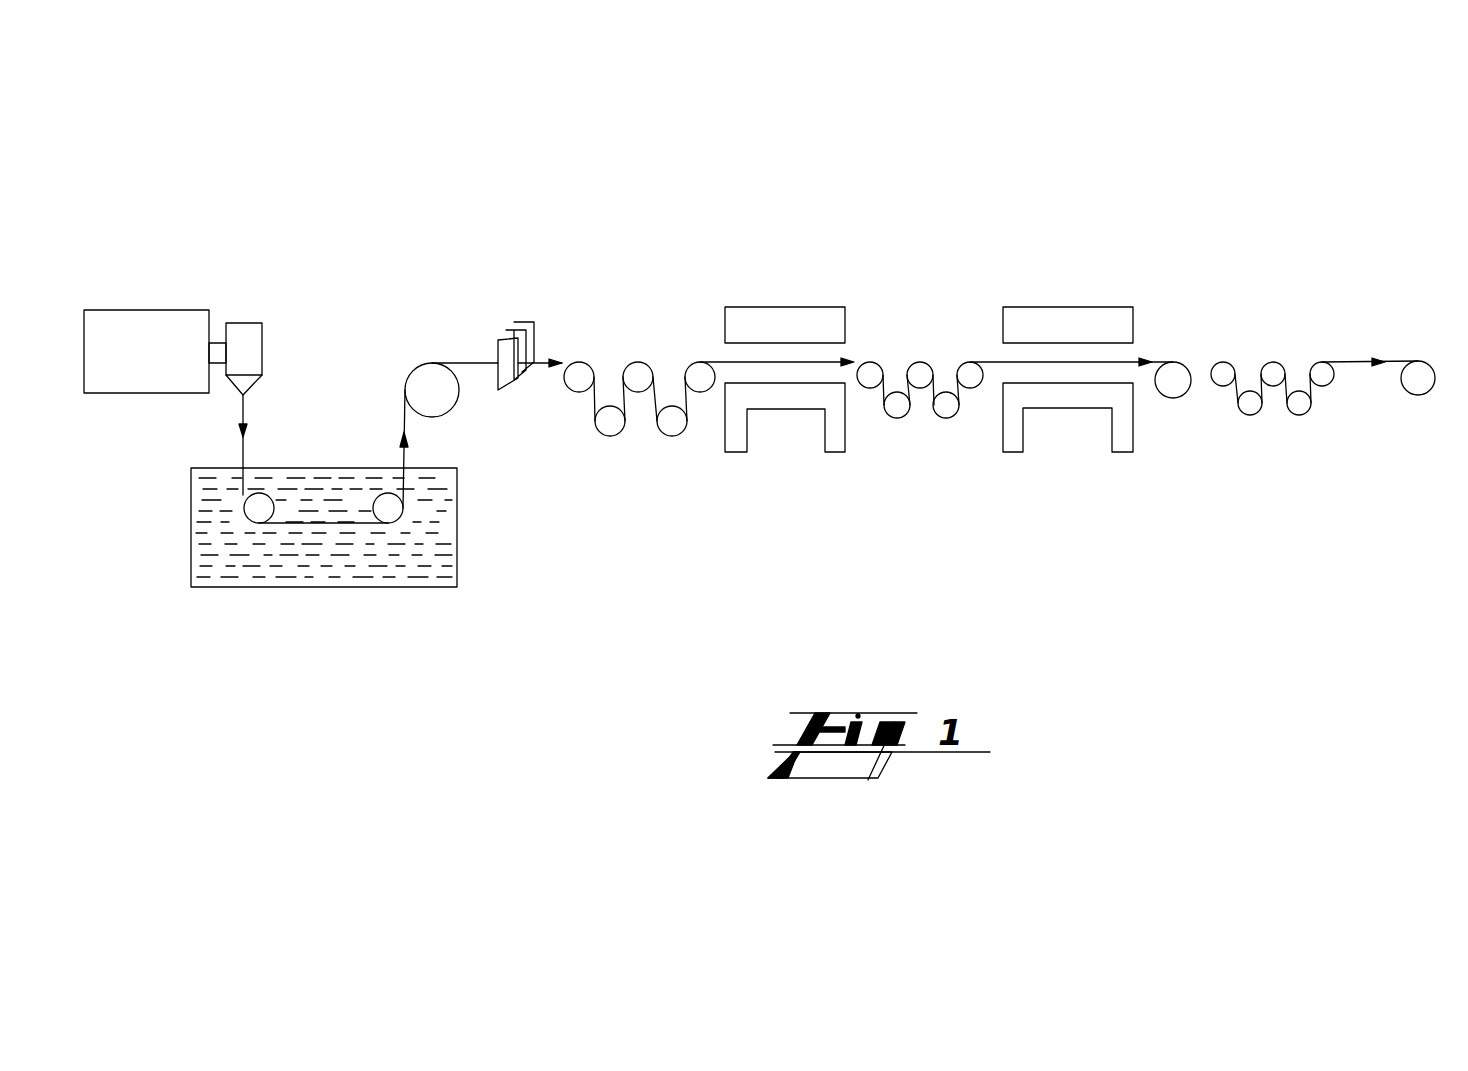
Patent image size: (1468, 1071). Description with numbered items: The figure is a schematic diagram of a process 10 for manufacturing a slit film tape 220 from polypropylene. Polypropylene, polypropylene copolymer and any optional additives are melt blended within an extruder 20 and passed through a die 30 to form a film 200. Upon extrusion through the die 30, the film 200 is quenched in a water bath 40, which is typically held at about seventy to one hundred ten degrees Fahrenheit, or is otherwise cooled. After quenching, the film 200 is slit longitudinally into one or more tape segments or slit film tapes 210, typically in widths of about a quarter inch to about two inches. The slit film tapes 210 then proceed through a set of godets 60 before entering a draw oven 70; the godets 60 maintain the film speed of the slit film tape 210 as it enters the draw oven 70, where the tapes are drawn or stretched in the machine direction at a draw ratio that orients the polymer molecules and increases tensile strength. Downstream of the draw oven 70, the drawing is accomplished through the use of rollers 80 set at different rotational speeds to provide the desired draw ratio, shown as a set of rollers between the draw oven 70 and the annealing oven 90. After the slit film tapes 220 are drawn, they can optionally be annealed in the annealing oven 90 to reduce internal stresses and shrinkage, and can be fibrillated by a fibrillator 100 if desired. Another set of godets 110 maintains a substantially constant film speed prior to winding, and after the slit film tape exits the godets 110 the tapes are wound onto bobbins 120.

The process 10 is at (800, 246).
The extruder 20 is at (158, 310).
The die 30 is at (263, 390).
The water bath 40 is at (457, 520).
The godets 60 is at (608, 472).
The draw oven 70 is at (755, 307).
The second roller set 80 is at (908, 468).
The annealing oven 90 is at (1068, 307).
The fibrillator 100 is at (1183, 396).
The godets 110 is at (1290, 450).
The bobbins 120 is at (1424, 360).
The film 200 is at (242, 402).
The slit film tapes 210 is at (540, 365).
The slit film tape 220 is at (852, 362).